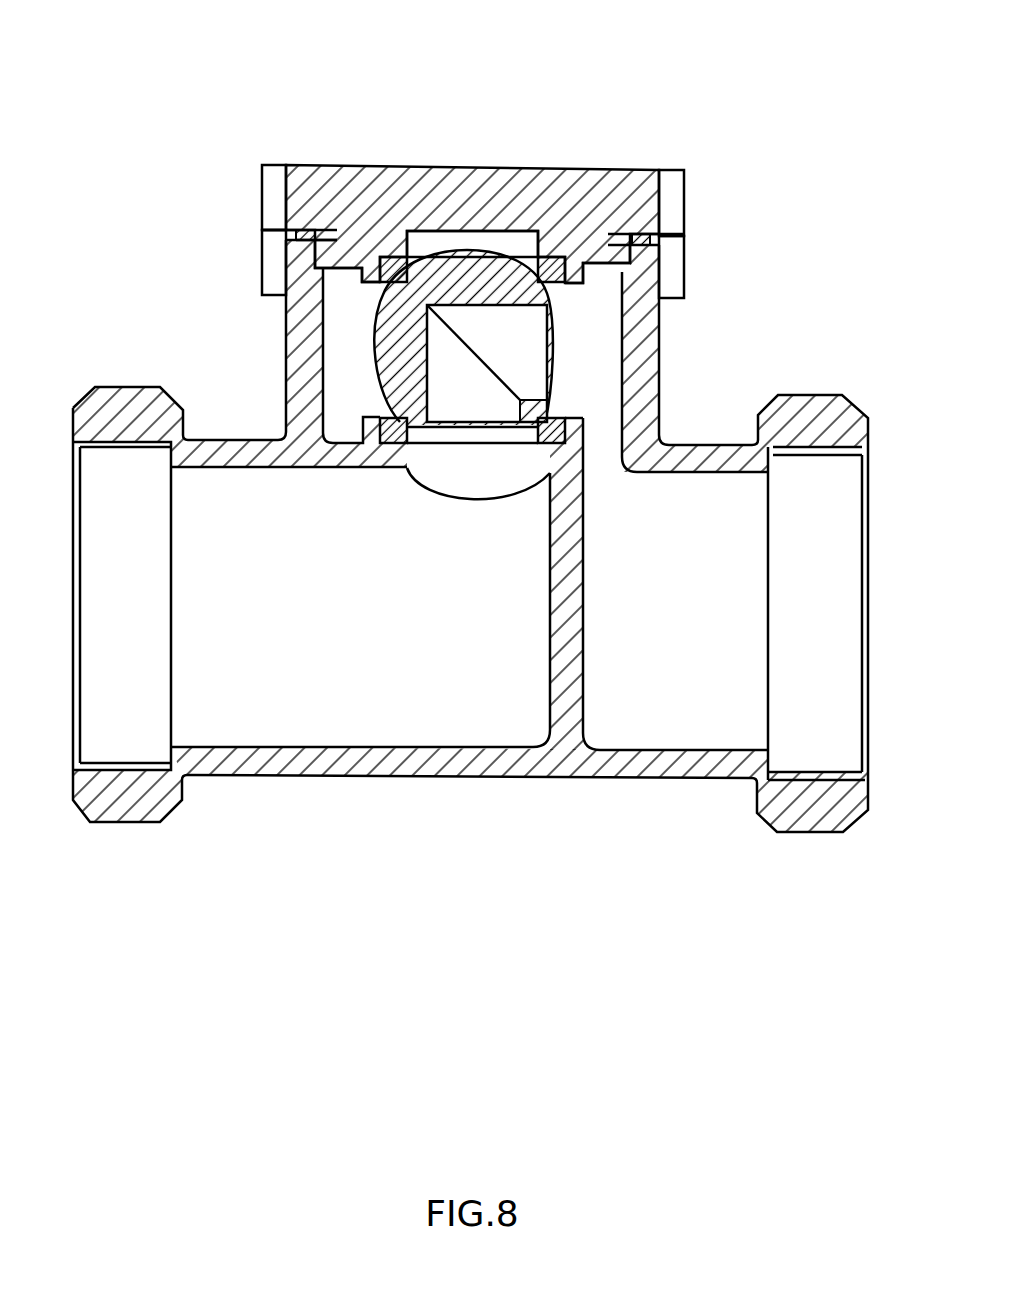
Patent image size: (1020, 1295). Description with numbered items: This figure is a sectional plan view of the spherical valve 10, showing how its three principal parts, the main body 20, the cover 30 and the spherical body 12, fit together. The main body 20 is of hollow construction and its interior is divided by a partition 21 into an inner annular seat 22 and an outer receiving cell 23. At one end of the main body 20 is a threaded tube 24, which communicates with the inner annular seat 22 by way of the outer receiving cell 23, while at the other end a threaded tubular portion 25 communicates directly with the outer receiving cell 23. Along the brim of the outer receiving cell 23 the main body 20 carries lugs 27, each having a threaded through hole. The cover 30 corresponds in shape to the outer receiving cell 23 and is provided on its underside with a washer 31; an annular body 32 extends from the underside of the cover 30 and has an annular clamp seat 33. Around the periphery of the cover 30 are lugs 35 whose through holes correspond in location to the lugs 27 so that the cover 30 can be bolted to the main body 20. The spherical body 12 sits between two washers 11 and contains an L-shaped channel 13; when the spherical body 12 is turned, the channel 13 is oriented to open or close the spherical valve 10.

The spherical valve 10 is at (705, 107).
The washers 11 is at (563, 274).
The spherical body 12 is at (490, 260).
The L-shaped channel 13 is at (437, 357).
The main body 20 is at (325, 768).
The partition 21 is at (573, 500).
The inner annular seat 22 is at (447, 475).
The outer receiving cell 23 is at (608, 348).
The threaded tube 24 is at (127, 750).
The threaded tubular portion 25 is at (808, 763).
The lugs 27 is at (677, 260).
The cover 30 is at (365, 177).
The washer 31 is at (297, 237).
The annular body 32 is at (343, 252).
The annular clamp seat 33 is at (332, 273).
The lugs 35 is at (677, 190).